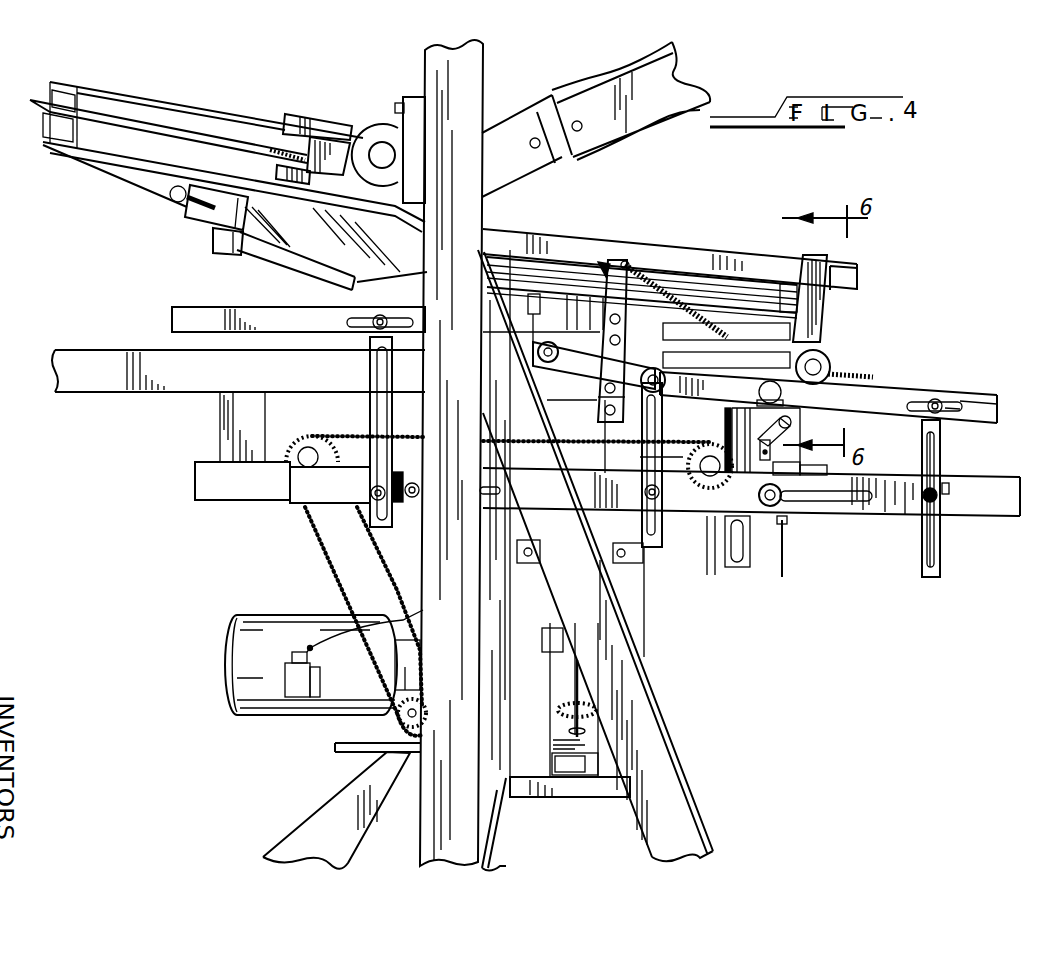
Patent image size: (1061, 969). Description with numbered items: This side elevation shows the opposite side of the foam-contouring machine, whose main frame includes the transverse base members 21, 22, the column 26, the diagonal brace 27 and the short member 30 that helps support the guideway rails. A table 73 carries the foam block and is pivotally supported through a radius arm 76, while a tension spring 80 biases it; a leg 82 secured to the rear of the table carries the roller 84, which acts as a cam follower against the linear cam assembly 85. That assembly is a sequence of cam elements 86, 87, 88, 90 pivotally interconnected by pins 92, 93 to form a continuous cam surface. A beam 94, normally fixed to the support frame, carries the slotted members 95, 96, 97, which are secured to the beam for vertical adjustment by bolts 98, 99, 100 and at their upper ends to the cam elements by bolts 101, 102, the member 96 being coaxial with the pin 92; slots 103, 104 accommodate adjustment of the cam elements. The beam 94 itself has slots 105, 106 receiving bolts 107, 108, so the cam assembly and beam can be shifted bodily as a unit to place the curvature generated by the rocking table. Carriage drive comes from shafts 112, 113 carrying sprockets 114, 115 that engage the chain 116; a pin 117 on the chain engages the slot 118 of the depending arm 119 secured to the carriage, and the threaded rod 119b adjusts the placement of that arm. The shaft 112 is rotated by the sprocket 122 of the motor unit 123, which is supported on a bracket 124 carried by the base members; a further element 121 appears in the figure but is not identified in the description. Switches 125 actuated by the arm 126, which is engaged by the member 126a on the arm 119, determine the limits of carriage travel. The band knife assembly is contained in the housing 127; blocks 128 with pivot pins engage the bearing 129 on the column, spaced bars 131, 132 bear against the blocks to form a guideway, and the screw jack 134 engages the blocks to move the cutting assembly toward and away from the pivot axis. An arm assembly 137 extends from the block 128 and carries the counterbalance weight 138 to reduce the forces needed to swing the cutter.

The transverse base member 21 is at (497, 837).
The transverse base member 22 is at (298, 812).
The column 26 is at (467, 88).
The diagonal brace 27 is at (650, 747).
The short member 30 is at (563, 783).
The table 73 is at (668, 248).
The radius arm 76 is at (598, 260).
The tension spring 80 is at (713, 329).
The leg 82 is at (813, 317).
The roller 84 is at (783, 403).
The linear cam assembly 85 is at (1002, 398).
The cam element 86 is at (915, 400).
The cam element 87 is at (718, 383).
The cam element 88 is at (599, 367).
The cam element 90 is at (187, 320).
The pin 92 is at (658, 368).
The pin 93 is at (550, 343).
The beam 94 is at (900, 517).
The slotted member 95 is at (940, 558).
The slotted member 96 is at (655, 540).
The slotted member 97 is at (380, 370).
The bolt 98 is at (937, 497).
The bolt 99 is at (655, 493).
The bolt 100 is at (375, 492).
The bolt 101 is at (940, 403).
The bolt 102 is at (357, 320).
The slot 103 is at (950, 412).
The slot 104 is at (405, 300).
The slot 105 is at (890, 520).
The slot 106 is at (487, 495).
The bolt 107 is at (777, 500).
The bolt 108 is at (408, 500).
The shaft 112 is at (300, 463).
The shaft 113 is at (722, 527).
The sprocket 114 is at (290, 440).
The sprocket 115 is at (688, 458).
The chain 116 is at (333, 432).
The pin 117 is at (733, 470).
The slot 118 is at (737, 567).
The depending arm 119 is at (780, 577).
The threaded rod 119b is at (868, 372).
The drive chain 121 is at (322, 548).
The sprocket 122 is at (360, 738).
The motor unit 123 is at (267, 637).
The bracket 124 is at (395, 717).
The switch 125 is at (790, 467).
The arm 126 is at (787, 433).
The member 126a is at (840, 373).
The housing 127 is at (138, 172).
The block 128 is at (333, 148).
The bearing 129 is at (403, 103).
The bar 131 is at (290, 122).
The bar 132 is at (277, 173).
The screw jack 134 is at (143, 118).
The arm assembly 137 is at (547, 173).
The counterbalance weight 138 is at (692, 122).